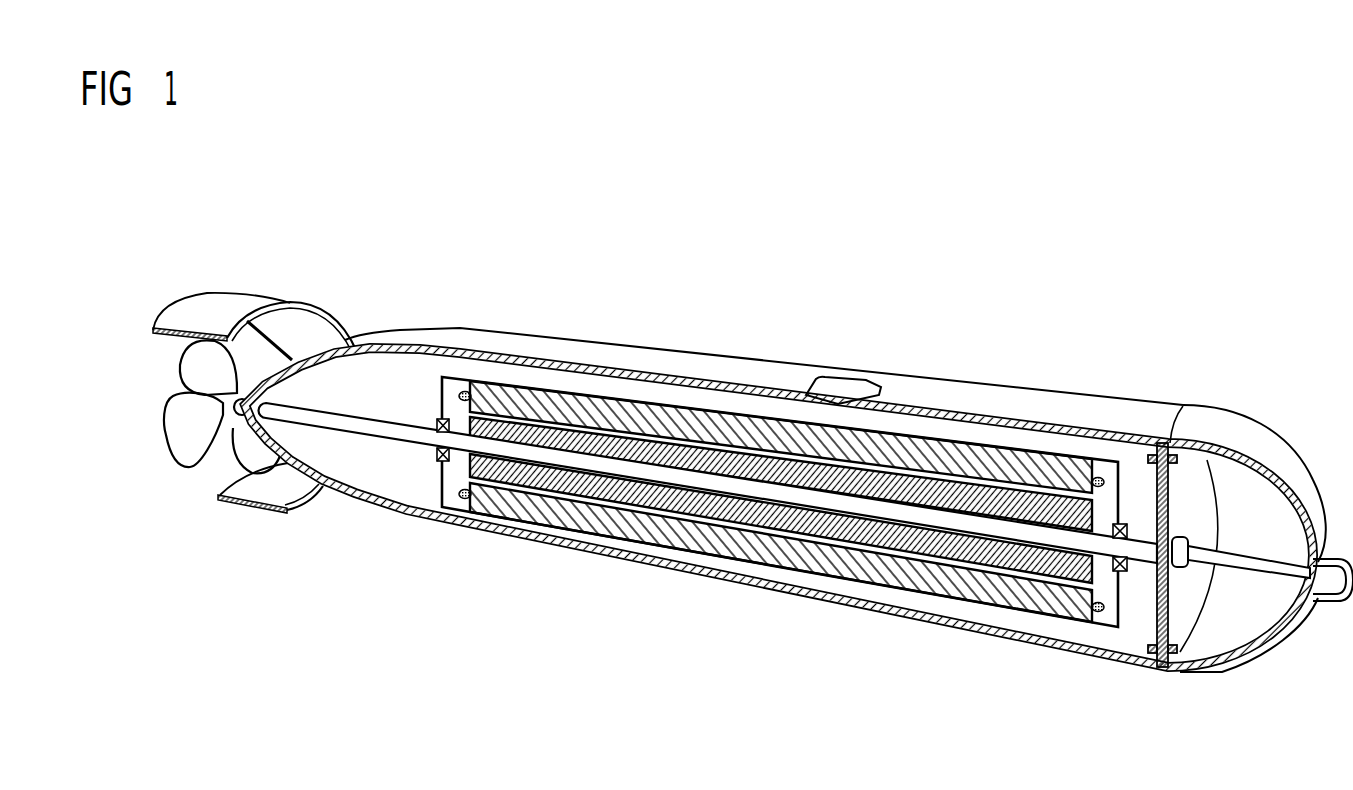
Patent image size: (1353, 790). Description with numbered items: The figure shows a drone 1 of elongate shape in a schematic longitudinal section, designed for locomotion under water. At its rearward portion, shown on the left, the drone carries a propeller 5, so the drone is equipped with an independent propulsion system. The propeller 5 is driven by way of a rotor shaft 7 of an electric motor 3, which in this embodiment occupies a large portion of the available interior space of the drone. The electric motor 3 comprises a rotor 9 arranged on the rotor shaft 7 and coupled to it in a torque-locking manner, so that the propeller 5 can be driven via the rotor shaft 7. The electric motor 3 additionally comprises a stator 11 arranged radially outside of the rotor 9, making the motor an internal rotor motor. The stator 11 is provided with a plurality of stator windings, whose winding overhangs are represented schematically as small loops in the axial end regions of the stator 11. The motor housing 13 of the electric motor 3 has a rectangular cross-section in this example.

The drone 1 is at (318, 166).
The electric motor 3 is at (790, 414).
The propeller 5 is at (138, 418).
The rotor shaft 7 is at (371, 421).
The rotor 9 is at (533, 430).
The stator 11 is at (970, 460).
The motor housing 13 is at (1102, 462).